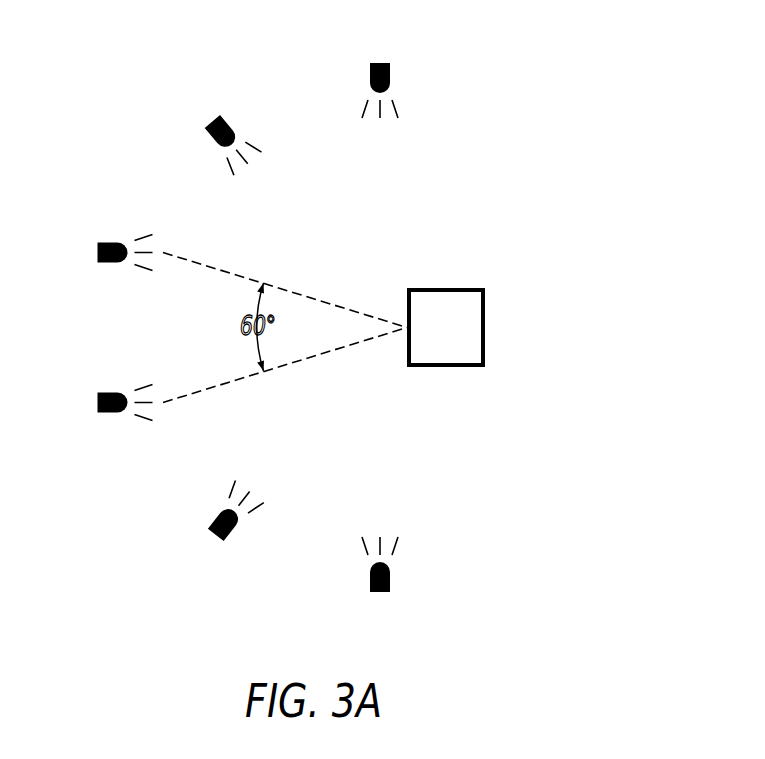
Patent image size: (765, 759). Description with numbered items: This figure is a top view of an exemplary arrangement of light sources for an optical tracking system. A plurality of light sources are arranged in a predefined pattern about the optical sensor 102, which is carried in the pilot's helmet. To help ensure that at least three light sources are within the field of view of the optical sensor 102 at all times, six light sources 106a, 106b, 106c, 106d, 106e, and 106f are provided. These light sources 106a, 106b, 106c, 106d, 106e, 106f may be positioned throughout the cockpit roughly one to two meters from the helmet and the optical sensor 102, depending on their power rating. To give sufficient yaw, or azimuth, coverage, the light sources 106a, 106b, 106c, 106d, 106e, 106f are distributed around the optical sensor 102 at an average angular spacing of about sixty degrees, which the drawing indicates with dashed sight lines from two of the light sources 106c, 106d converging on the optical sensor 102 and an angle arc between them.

The optical sensor 102 is at (485, 328).
The light source 106a is at (380, 63).
The light source 106b is at (217, 118).
The light source 106c is at (97, 252).
The light source 106d is at (97, 402).
The light source 106e is at (218, 537).
The light source 106f is at (380, 592).